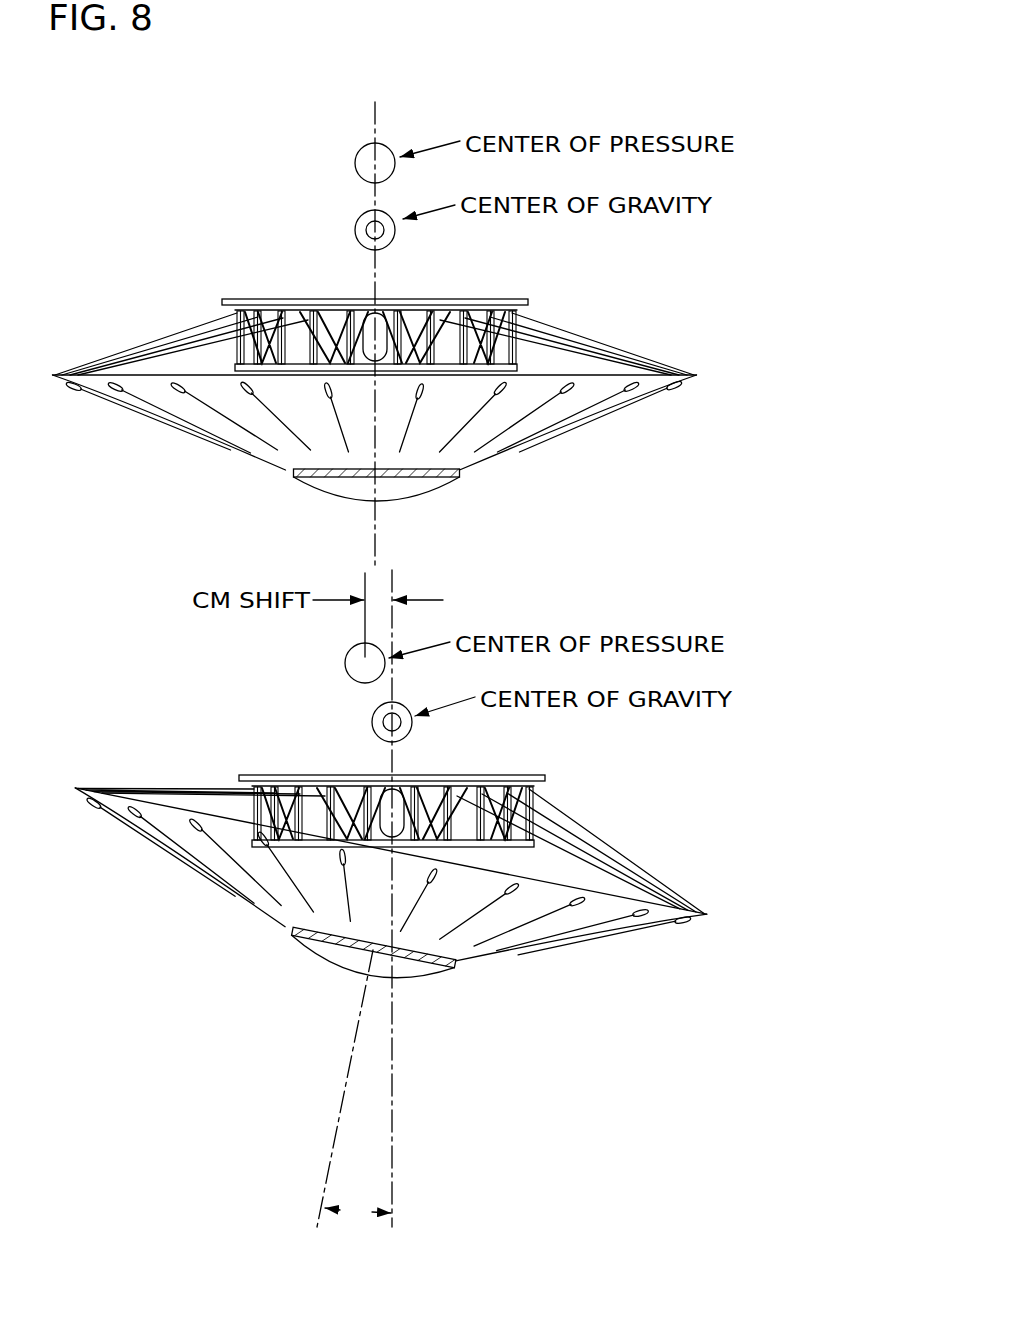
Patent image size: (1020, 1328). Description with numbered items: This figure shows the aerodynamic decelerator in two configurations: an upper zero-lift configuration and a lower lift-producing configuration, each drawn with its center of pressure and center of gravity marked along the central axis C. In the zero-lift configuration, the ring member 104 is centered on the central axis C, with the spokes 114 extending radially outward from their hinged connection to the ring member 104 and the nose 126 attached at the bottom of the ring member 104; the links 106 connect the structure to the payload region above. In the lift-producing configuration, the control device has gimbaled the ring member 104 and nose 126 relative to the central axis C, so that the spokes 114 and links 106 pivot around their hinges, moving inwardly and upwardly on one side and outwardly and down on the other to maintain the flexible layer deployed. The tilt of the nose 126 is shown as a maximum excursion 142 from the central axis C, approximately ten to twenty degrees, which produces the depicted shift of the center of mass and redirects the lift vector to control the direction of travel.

The ring member 104 is at (290, 936).
The links 106 is at (545, 783).
The spokes 114 is at (634, 849).
The nose 126 is at (328, 964).
The maximum excursion 142 is at (320, 1208).
The central axis C is at (375, 112).